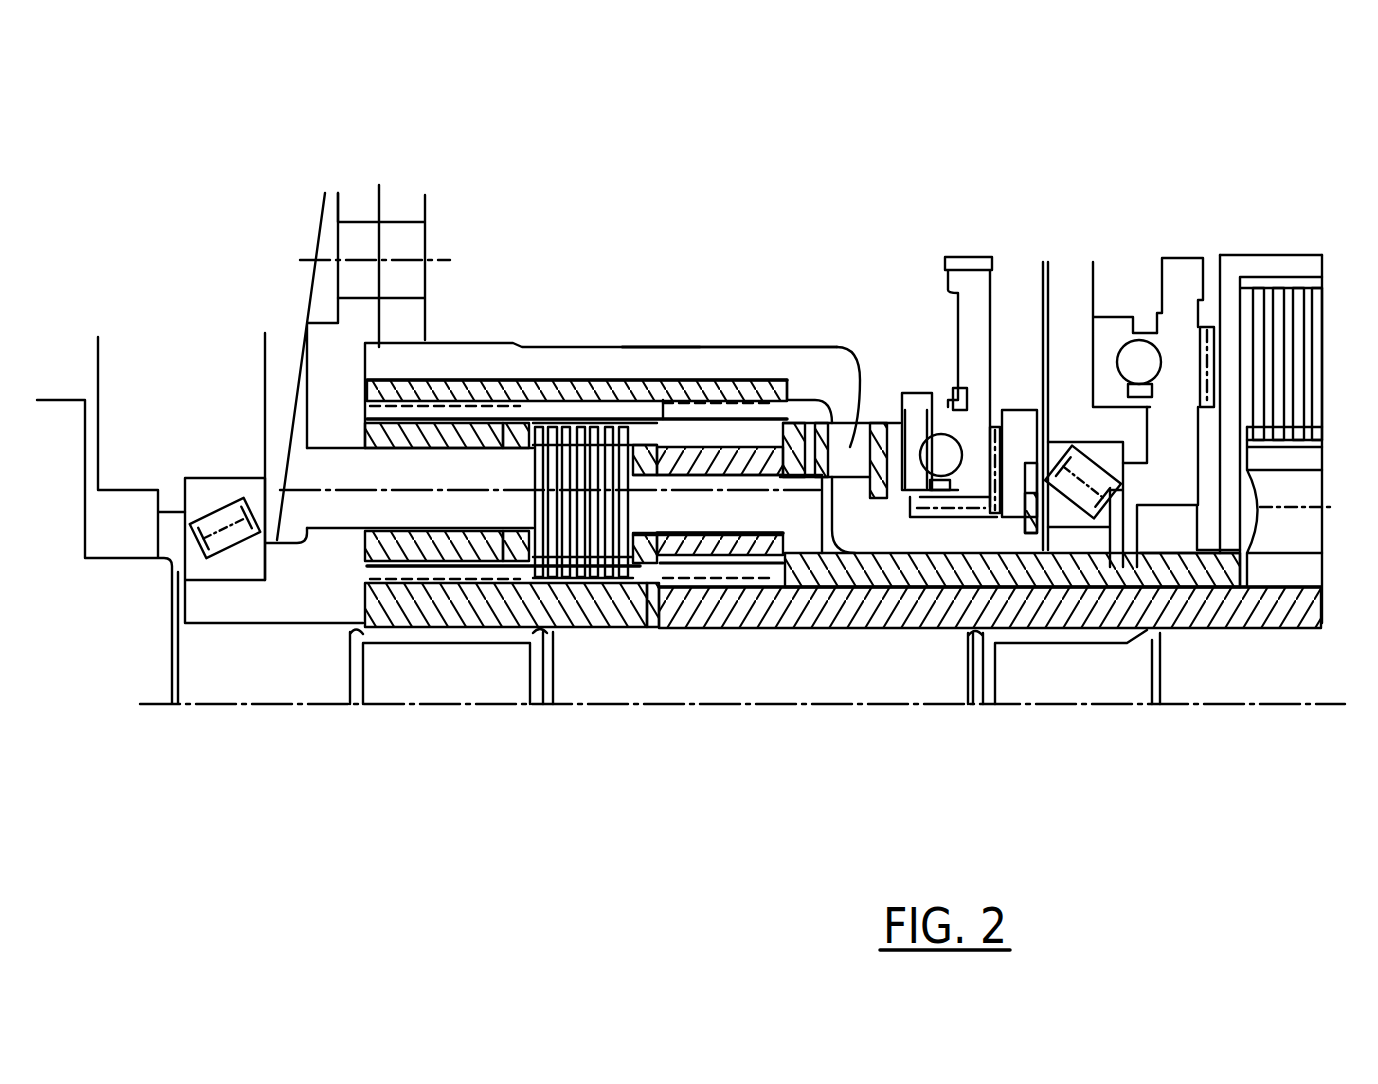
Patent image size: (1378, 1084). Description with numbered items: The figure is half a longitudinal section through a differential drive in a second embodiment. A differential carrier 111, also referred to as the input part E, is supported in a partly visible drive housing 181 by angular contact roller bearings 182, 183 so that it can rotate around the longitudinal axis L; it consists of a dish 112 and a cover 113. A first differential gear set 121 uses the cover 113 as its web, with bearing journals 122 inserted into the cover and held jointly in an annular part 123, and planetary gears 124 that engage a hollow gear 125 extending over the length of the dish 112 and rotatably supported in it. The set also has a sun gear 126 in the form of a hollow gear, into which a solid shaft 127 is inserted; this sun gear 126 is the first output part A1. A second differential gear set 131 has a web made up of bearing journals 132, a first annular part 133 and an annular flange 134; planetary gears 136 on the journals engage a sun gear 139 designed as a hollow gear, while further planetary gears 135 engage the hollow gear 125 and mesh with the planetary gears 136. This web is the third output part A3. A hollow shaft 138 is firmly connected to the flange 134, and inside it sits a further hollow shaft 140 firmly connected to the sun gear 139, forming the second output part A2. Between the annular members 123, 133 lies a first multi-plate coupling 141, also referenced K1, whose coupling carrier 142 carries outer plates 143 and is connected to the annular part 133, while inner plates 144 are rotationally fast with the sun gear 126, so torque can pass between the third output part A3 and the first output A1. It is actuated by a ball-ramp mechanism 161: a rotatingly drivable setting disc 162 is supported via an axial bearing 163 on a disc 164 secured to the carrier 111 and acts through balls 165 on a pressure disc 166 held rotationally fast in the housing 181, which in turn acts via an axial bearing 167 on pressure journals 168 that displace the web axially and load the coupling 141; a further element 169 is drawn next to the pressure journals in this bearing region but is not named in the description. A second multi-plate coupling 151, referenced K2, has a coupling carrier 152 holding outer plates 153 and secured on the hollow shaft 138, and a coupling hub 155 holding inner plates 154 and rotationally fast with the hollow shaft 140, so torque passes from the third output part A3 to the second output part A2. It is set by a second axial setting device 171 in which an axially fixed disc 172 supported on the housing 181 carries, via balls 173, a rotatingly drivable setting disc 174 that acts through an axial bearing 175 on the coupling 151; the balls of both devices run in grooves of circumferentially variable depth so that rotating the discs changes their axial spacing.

The differential carrier 111 is at (715, 320).
The dish 112 is at (756, 360).
The cover 113 is at (330, 372).
The first differential gear set 121 is at (480, 334).
The bearing journals 122 is at (335, 467).
The annular part 123 is at (505, 447).
The planetary gears 124 is at (425, 425).
The hollow gear 125 is at (541, 400).
The sun gear 126 is at (610, 615).
The solid shaft 127 is at (400, 682).
The second differential gear set 131 is at (693, 340).
The bearing journals 132 is at (706, 517).
The first annular part 133 is at (645, 600).
The annular flange 134 is at (851, 447).
The planetary gears 135 is at (766, 613).
The planetary gears 136 is at (682, 552).
The hollow shaft 138 is at (834, 573).
The sun gear 139 is at (738, 473).
The hollow shaft 140 is at (897, 613).
The first multi-plate coupling 141 is at (564, 406).
The coupling carrier 142 is at (612, 447).
The outer plates 143 is at (584, 447).
The inner plates 144 is at (602, 445).
The second multi-plate coupling 151 is at (1245, 182).
The coupling carrier 152 is at (1285, 252).
The outer plates 153 is at (1320, 287).
The inner plates 154 is at (1260, 320).
The coupling hub 155 is at (1313, 497).
The ball-ramp mechanism 161 is at (908, 246).
The setting disc 162 is at (972, 280).
The axial bearing 163 is at (1000, 400).
The disc 164 is at (1018, 425).
The balls 165 is at (942, 440).
The pressure disc 166 is at (893, 470).
The axial bearing 167 is at (875, 450).
The pressure journals 168 is at (858, 480).
The bearing bush 169 is at (810, 450).
The second axial setting device 171 is at (1142, 208).
The first axially fixed disc 172 is at (1108, 343).
The balls 173 is at (1143, 340).
The second setting disc 174 is at (1178, 278).
The axial bearing 175 is at (1207, 327).
The drive housing 181 is at (113, 390).
The angular contact roller bearing 182 is at (205, 487).
The angular contact roller bearing 183 is at (1083, 443).
The input part E is at (404, 178).
The longitudinal axis L is at (150, 707).
The first output part A1 is at (437, 670).
The second output part A2 is at (1200, 620).
The third output part A3 is at (807, 457).
The first multi-plate coupling K1 is at (587, 652).
The second multi-plate coupling K2 is at (1293, 568).